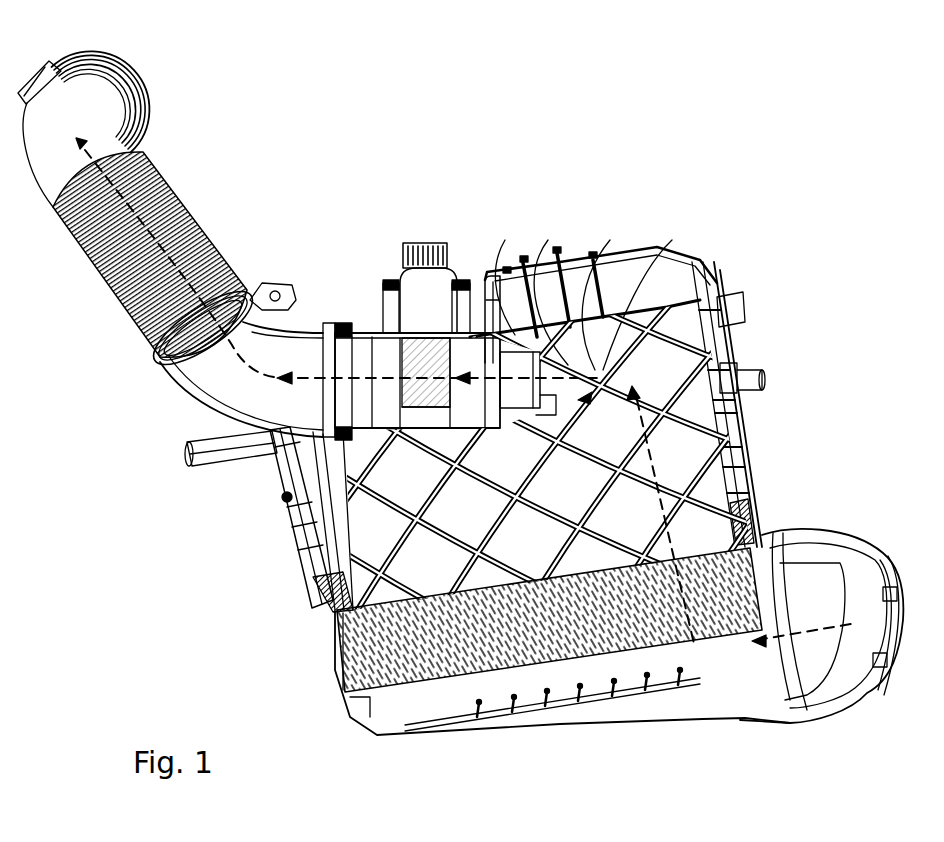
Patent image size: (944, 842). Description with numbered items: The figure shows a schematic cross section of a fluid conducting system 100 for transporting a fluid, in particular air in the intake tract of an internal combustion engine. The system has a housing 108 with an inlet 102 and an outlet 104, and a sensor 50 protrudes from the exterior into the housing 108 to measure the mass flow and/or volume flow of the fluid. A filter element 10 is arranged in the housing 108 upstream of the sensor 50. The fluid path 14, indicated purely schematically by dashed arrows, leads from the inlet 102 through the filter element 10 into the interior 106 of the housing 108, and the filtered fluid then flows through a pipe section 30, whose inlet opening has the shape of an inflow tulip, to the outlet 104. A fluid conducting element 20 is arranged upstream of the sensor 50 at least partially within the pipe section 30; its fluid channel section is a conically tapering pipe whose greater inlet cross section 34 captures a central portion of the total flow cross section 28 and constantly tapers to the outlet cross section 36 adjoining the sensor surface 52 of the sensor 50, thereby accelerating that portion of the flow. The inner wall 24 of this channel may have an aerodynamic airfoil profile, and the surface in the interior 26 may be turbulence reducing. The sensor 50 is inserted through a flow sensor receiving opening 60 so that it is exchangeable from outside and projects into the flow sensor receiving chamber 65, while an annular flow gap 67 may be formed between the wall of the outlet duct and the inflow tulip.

The filter element 10 is at (393, 657).
The fluid path 14 is at (800, 647).
The fluid conducting element 20 is at (490, 277).
The inner wall 24 is at (531, 303).
The interior 26 is at (526, 414).
The total flow cross section 28 is at (647, 262).
The pipe section 30 is at (353, 323).
The inlet cross section 34 is at (594, 262).
The outlet cross section 36 is at (414, 285).
The sensor 50 is at (433, 241).
The sensor surface 52 is at (336, 412).
The flow sensor receiving opening 60 is at (391, 290).
The flow sensor receiving chamber 65 is at (345, 395).
The annular flow gap 67 is at (303, 493).
The fluid conducting system 100 is at (739, 66).
The inlet 102 is at (873, 550).
The outlet 104 is at (133, 72).
The interior 106 is at (587, 499).
The housing 108 is at (717, 280).